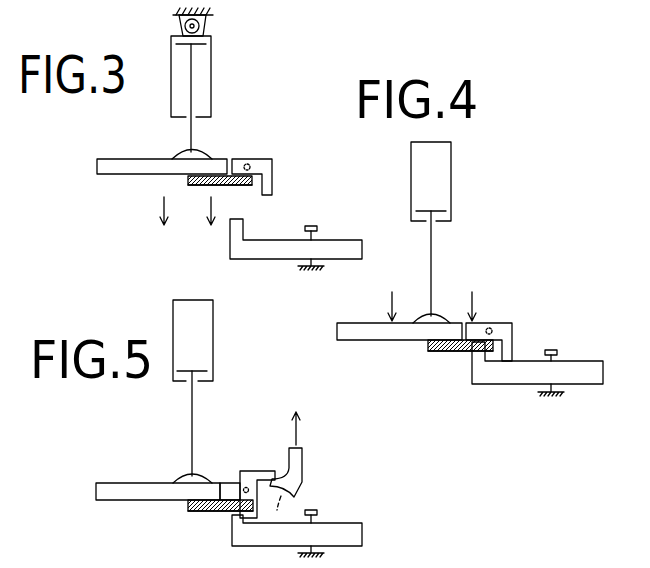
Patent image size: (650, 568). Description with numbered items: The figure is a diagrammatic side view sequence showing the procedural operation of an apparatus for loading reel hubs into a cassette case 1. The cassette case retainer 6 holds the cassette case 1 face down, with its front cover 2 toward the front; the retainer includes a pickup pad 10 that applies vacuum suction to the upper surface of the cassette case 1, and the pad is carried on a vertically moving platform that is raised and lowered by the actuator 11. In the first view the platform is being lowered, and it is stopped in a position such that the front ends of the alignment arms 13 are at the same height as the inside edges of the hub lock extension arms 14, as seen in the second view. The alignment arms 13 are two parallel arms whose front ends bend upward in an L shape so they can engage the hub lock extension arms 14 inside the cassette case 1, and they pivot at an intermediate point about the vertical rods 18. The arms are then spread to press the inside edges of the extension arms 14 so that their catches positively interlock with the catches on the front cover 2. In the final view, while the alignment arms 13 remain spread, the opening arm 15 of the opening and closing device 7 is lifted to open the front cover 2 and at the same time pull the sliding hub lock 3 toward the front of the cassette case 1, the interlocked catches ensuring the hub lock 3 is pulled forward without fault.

In FIG. 3, the cassette case 1 is at (125, 158).
In FIG. 4, the cassette case 1 is at (352, 338).
In FIG. 5, the cassette case 1 is at (115, 495).
In FIG. 3, the front cover 2 is at (271, 188).
In FIG. 4, the front cover 2 is at (510, 345).
In FIG. 5, the front cover 2 is at (264, 470).
In FIG. 3, the hub lock 3 is at (196, 186).
In FIG. 4, the hub lock 3 is at (428, 345).
In FIG. 5, the hub lock 3 is at (187, 513).
In FIG. 3, the cassette case retainer 6 is at (216, 104).
In FIG. 4, the cassette case retainer 6 is at (458, 219).
In FIG. 5, the opening and closing device 7 is at (348, 479).
In FIG. 3, the pickup pad 10 is at (197, 156).
In FIG. 5, the pickup pad 10 is at (205, 478).
In FIG. 3, the actuator 11 is at (213, 72).
In FIG. 4, the actuator 11 is at (451, 171).
In FIG. 5, the actuator 11 is at (214, 340).
In FIG. 3, the alignment arms 13 is at (282, 253).
In FIG. 4, the alignment arms 13 is at (520, 378).
In FIG. 5, the alignment arms 13 is at (354, 532).
In FIG. 3, the hub lock extension arms 14 is at (242, 151).
In FIG. 4, the hub lock extension arms 14 is at (450, 350).
In FIG. 5, the hub lock extension arms 14 is at (224, 516).
In FIG. 5, the opening arm 15 is at (307, 458).
In FIG. 5, the vertical rods 18 is at (318, 519).